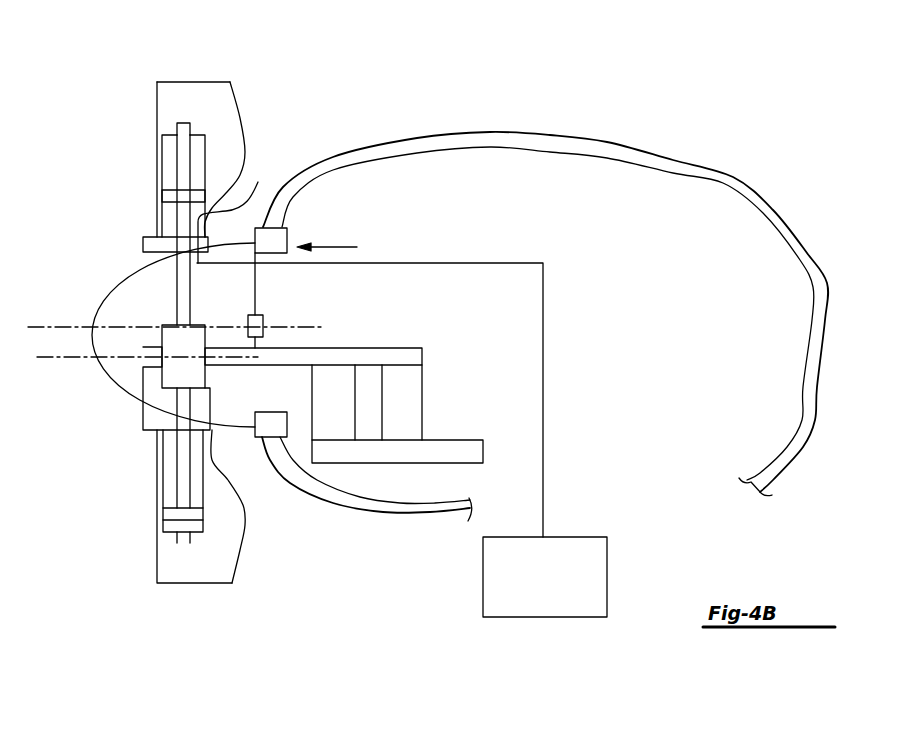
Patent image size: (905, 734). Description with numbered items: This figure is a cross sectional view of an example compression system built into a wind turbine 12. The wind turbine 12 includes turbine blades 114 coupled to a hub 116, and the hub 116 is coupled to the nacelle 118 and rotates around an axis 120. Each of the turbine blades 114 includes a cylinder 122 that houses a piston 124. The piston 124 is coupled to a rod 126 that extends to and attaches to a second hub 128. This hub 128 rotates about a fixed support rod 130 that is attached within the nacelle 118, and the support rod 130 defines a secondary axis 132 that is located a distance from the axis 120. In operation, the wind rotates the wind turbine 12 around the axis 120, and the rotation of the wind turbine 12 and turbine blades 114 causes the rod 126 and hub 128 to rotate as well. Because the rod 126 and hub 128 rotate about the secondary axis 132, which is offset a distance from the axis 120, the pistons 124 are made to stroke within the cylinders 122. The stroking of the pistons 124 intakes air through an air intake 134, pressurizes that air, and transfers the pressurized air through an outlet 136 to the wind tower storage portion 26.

The wind turbine 12 is at (148, 88).
The turbine blades 114 is at (212, 82).
The hub 116 is at (125, 390).
The nacelle 118 is at (347, 511).
The axis 120 is at (68, 327).
The cylinders 122 is at (172, 158).
The piston 124 is at (175, 196).
The rod 126 is at (183, 273).
The hub 128 is at (195, 377).
The fixed support rod 130 is at (403, 348).
The secondary axis 132 is at (67, 358).
The air intake 134 is at (185, 120).
The outlet 136 is at (243, 211).
The wind tower storage portion 26 is at (555, 589).